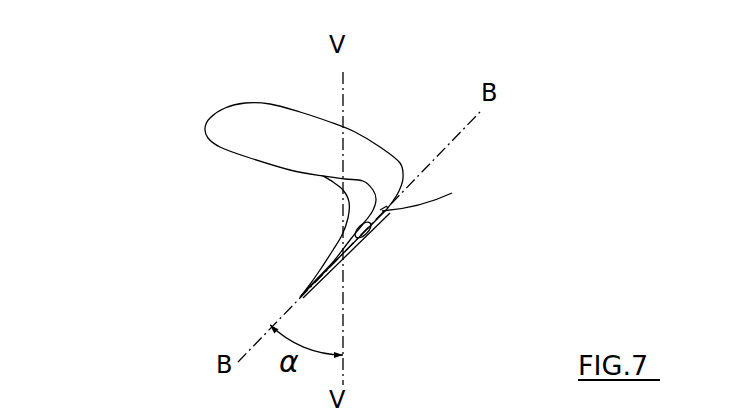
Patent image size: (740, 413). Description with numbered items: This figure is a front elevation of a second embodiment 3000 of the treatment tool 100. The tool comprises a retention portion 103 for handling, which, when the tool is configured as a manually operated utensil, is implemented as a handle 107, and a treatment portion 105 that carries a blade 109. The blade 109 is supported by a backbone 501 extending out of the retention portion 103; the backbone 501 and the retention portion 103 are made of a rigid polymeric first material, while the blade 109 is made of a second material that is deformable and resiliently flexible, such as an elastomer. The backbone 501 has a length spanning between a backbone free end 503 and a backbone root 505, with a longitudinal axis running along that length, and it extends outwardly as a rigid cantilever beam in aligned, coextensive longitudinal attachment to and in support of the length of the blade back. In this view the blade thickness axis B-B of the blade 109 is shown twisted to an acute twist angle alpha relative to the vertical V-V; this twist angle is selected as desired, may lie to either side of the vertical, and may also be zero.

The second embodiment 3000 is at (314, 157).
The treatment tool 100 is at (369, 157).
The retention portion 103 is at (283, 73).
The treatment portion 105 is at (457, 225).
The handle 107 is at (230, 113).
The blade 109 is at (318, 278).
The backbone 501 is at (439, 195).
The backbone free end 503 is at (368, 237).
The backbone root 505 is at (392, 175).